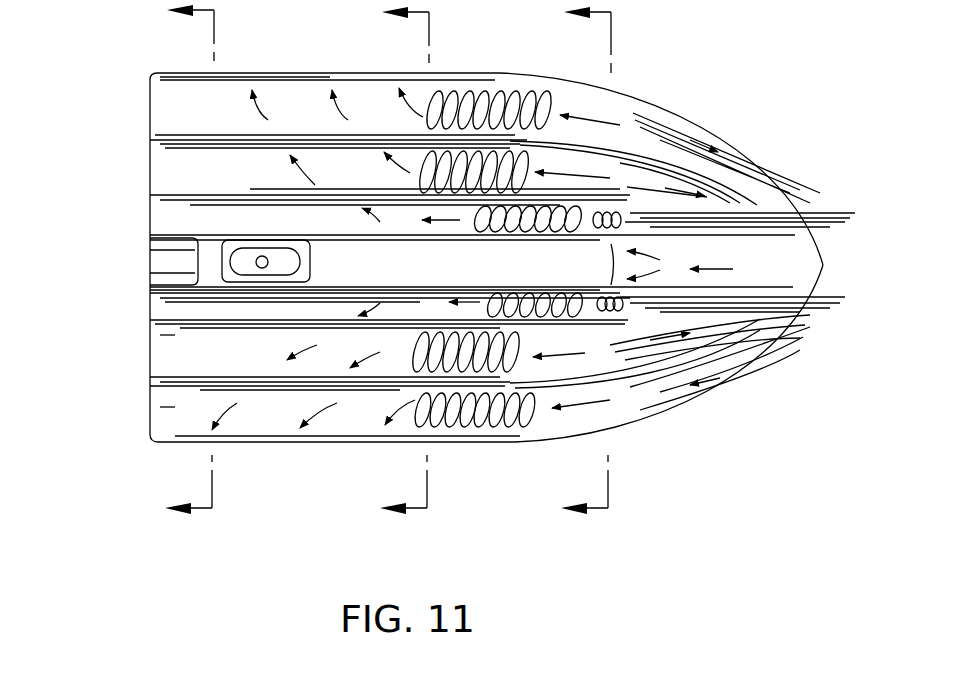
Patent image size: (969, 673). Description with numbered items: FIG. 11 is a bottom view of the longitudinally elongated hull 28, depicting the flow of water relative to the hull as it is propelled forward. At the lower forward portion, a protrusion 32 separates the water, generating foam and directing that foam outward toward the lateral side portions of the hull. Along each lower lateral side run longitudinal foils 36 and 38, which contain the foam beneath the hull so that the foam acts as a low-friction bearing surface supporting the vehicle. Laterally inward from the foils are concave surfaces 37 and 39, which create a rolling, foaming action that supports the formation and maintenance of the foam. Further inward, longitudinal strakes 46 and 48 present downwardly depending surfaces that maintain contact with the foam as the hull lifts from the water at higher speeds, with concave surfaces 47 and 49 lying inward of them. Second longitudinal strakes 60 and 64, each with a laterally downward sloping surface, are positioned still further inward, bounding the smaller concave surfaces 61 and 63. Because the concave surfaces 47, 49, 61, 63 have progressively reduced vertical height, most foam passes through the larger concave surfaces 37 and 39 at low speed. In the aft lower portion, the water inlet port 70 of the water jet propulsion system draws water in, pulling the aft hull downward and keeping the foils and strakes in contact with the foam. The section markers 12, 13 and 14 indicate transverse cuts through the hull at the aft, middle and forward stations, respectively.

The section line 12- 12 is at (601, 261).
The section line 13- 13 is at (420, 261).
The section line 14- 14 is at (205, 261).
The hull 28 is at (708, 118).
The protrusion 32 is at (522, 268).
The longitudinal foil 36 is at (301, 73).
The concave surface 37 is at (160, 106).
The longitudinal foil 38 is at (291, 440).
The concave surface 39 is at (165, 407).
The longitudinal strake 46 is at (170, 148).
The concave surface 47 is at (172, 167).
The longitudinal strake 48 is at (170, 375).
The concave surface 49 is at (178, 337).
The second longitudinal strake 60 is at (170, 205).
The concave surface 61 is at (172, 220).
The concave surface 63 is at (170, 295).
The second longitudinal strake 64 is at (172, 316).
The water inlet port 70 is at (243, 258).